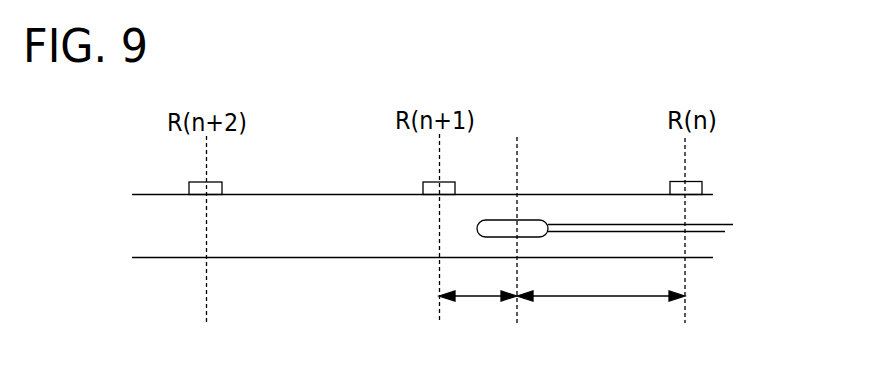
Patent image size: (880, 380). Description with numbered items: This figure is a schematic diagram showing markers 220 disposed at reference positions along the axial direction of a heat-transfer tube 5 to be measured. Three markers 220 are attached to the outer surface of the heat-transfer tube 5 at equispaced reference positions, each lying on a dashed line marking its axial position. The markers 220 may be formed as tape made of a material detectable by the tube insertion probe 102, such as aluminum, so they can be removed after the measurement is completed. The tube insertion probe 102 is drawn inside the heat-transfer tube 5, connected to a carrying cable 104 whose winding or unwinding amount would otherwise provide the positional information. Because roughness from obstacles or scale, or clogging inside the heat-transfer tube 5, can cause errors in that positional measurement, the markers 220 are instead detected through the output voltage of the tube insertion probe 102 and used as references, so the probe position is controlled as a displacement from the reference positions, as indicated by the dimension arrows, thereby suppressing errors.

The heat-transfer tube 5 is at (313, 194).
The marker 220 is at (213, 182).
The tube insertion probe 102 is at (517, 235).
The carrying cable 104 is at (717, 224).